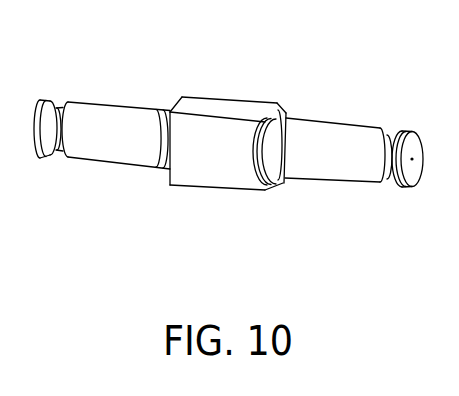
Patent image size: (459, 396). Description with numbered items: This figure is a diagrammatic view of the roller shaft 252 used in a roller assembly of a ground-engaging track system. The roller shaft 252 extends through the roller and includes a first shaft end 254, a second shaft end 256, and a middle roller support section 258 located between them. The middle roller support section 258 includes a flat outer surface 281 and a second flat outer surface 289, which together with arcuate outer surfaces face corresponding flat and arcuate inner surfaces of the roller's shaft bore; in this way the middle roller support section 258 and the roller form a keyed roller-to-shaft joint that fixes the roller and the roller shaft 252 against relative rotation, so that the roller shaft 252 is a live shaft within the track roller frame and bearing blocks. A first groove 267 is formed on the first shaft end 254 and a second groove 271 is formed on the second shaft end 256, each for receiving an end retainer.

The roller shaft 252 is at (292, 83).
The first shaft end 254 is at (73, 160).
The second shaft end 256 is at (370, 127).
The middle roller support section 258 is at (242, 189).
The first groove 267 is at (58, 100).
The second groove 271 is at (387, 185).
The flat outer surface 281 is at (200, 107).
The second flat outer surface 289 is at (178, 186).